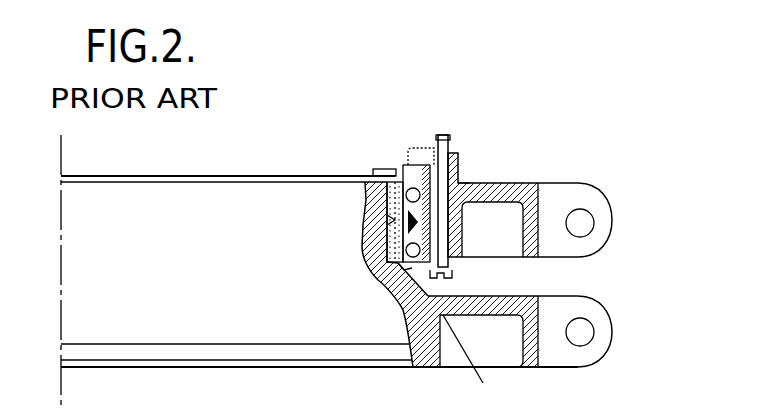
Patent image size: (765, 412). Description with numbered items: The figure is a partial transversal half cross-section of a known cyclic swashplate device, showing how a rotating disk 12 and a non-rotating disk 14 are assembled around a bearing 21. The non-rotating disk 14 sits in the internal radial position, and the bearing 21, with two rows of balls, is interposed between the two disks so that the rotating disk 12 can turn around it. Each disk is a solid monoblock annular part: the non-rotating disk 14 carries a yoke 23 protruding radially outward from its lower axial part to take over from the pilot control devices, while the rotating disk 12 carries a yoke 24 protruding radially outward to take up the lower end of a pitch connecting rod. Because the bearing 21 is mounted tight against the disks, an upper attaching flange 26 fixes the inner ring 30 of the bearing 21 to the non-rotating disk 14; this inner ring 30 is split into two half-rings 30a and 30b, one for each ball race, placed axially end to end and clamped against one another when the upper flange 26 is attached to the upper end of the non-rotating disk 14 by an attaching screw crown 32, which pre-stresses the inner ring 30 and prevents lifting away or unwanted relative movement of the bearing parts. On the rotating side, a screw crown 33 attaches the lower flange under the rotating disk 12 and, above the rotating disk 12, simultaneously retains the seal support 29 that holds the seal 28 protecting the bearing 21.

The rotating disk 12 is at (510, 188).
The non-rotating disk 14 is at (364, 258).
The bearing 21 is at (462, 184).
The yoke 23 is at (603, 333).
The yoke 24 is at (600, 235).
The upper attaching flange 26 is at (413, 178).
The seal 28 is at (417, 150).
The seal support 29 is at (436, 147).
The inner ring 30 is at (390, 203).
The half-ring 30a is at (385, 226).
The half-ring 30b is at (378, 280).
The attaching screw crown 32 is at (373, 170).
The screw crown 33 is at (452, 275).